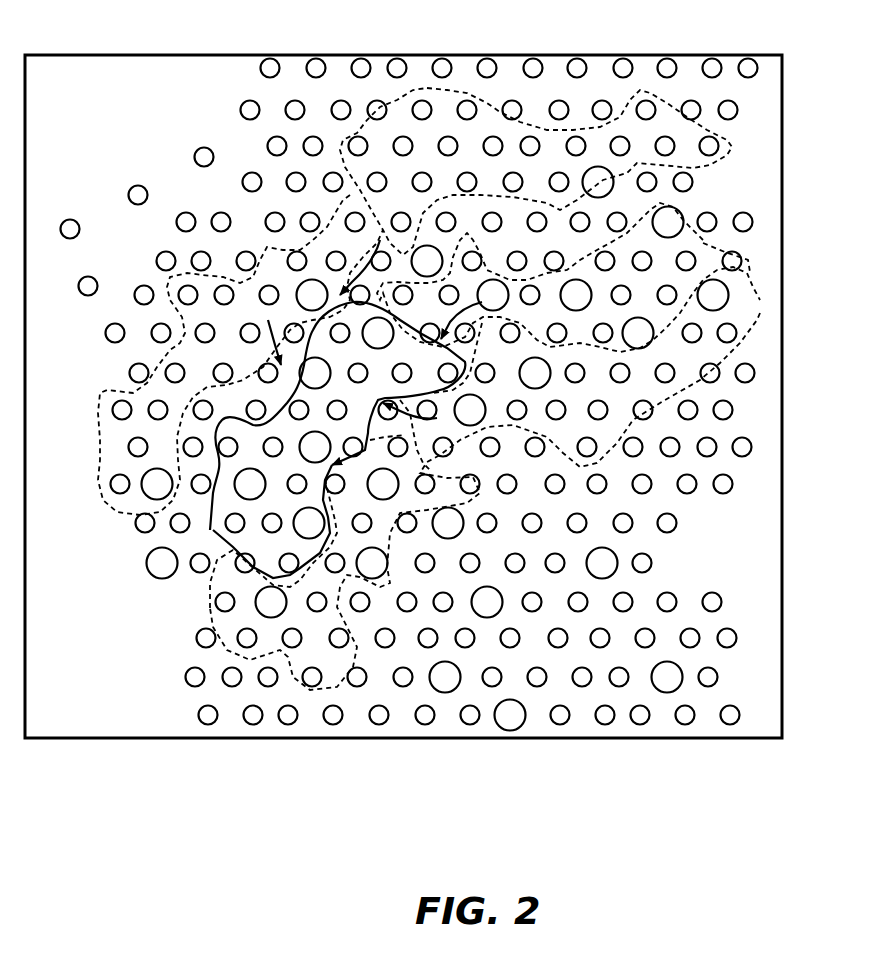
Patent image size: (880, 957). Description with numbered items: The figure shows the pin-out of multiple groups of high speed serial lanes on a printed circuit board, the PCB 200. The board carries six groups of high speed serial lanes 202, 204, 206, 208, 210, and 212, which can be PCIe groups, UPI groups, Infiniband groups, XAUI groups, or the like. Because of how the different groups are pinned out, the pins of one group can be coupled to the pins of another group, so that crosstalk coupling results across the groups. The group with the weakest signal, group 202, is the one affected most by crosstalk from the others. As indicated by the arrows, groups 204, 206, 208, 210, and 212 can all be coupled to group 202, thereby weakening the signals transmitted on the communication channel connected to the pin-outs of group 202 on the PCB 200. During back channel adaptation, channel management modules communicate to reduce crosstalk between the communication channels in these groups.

The printed circuit board 200 is at (103, 731).
The group of high speed serial lanes 202 is at (210, 530).
The group of high speed serial lanes 204 is at (100, 457).
The group of high speed serial lanes 206 is at (427, 88).
The group of high speed serial lanes 208 is at (703, 240).
The group of high speed serial lanes 210 is at (760, 313).
The group of high speed serial lanes 212 is at (207, 608).